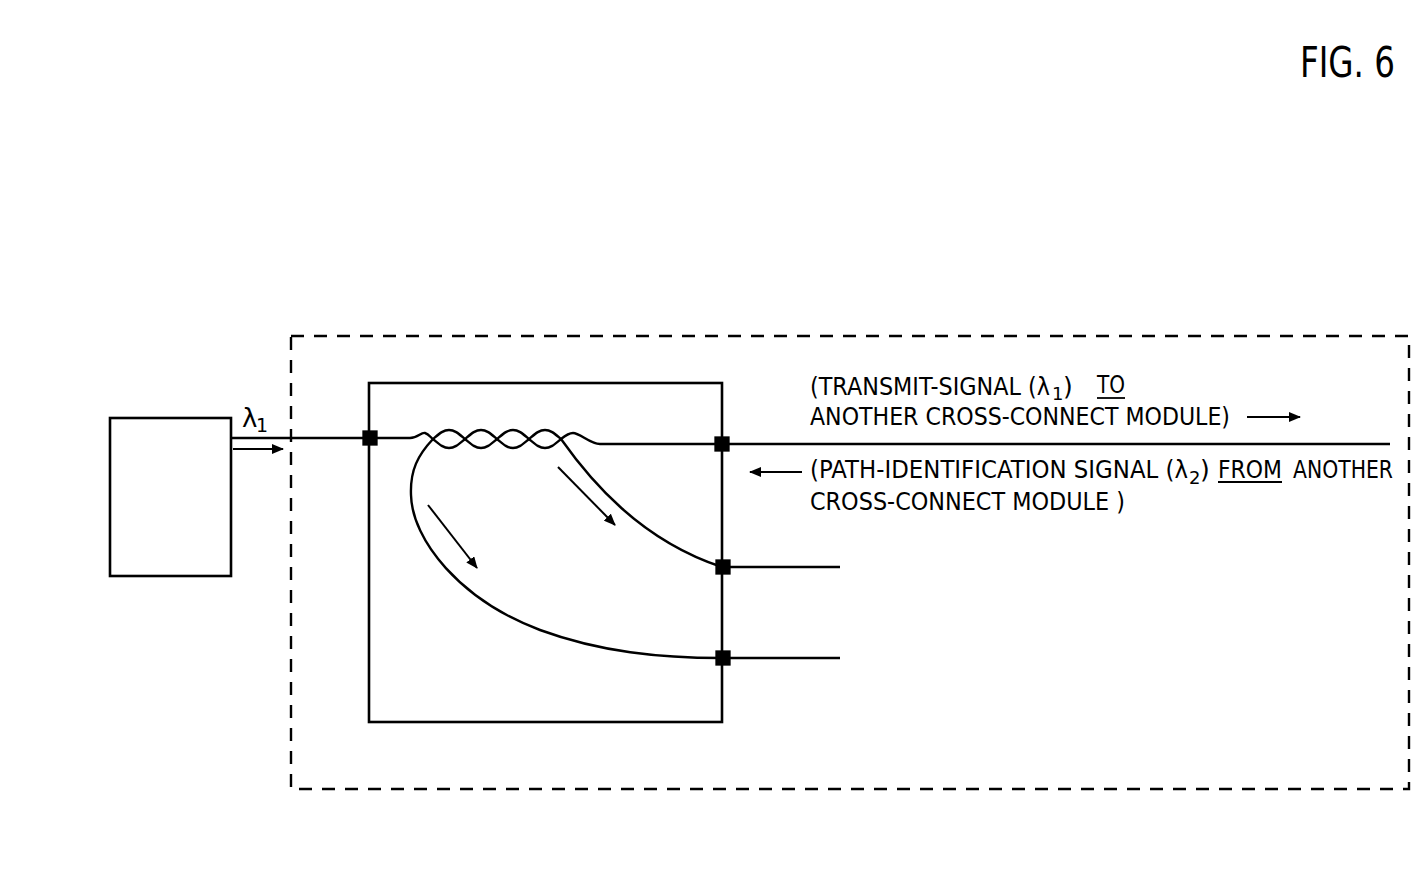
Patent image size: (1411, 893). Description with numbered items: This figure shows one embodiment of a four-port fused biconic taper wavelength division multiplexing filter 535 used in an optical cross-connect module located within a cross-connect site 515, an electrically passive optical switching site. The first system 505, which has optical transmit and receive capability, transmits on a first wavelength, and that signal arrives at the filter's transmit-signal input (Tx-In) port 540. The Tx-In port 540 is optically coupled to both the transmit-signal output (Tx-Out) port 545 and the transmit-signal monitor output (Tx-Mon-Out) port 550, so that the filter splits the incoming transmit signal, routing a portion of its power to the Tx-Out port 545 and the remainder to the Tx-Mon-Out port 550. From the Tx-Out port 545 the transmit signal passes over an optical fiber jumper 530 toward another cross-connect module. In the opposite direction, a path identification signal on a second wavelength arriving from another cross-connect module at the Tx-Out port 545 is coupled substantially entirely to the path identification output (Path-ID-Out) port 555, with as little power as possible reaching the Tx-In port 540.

The system-1 505 is at (170, 512).
The cross-connect site 515 is at (850, 562).
The optical fiber jumper 530 is at (790, 443).
The first filter 535 is at (545, 552).
The transmit-signal input (Tx-In) port 540 is at (342, 425).
The transmit-signal output (Tx-Out) port 545 is at (745, 427).
The transmit-signal monitor output (Tx-Mon-Out) port 550 is at (778, 552).
The path identification output (Path-ID-Out) port 555 is at (778, 642).